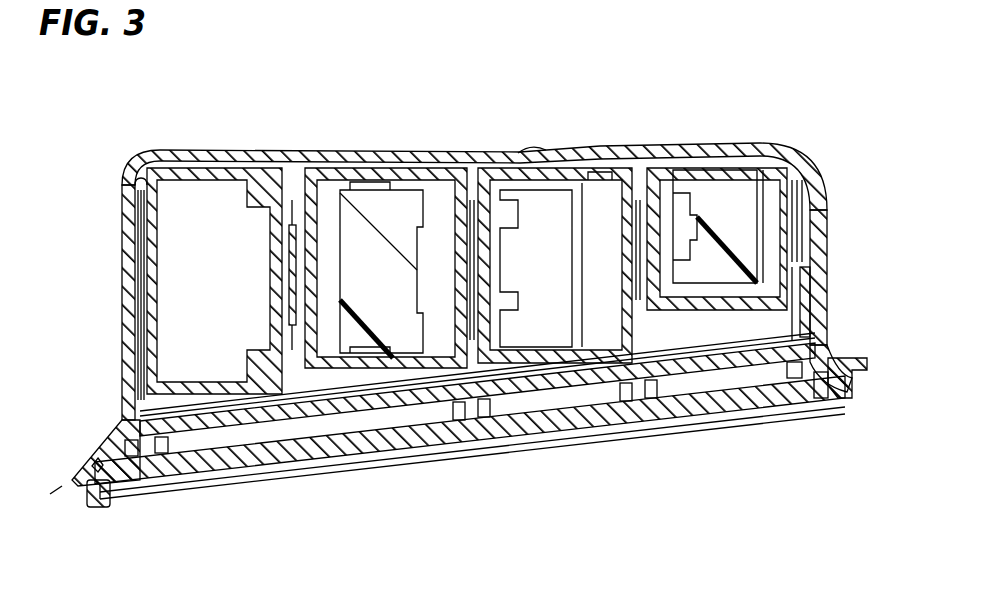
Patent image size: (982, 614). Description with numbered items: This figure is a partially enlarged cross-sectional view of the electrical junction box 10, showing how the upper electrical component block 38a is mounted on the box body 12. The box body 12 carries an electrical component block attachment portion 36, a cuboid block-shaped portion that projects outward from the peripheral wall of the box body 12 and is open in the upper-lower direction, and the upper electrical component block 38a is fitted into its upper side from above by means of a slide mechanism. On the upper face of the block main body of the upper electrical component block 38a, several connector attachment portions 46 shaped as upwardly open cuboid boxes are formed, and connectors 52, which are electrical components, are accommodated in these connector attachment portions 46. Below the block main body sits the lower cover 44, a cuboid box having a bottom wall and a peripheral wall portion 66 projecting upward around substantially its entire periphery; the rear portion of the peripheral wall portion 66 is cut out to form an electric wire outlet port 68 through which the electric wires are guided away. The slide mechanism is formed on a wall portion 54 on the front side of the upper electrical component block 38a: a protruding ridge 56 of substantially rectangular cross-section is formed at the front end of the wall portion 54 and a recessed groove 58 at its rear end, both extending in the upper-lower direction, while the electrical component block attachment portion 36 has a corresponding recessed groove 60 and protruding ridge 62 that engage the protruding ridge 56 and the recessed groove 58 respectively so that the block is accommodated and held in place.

The electrical junction box 10 is at (473, 72).
The box body 12 is at (498, 106).
The electrical component block attachment portion 36 is at (532, 134).
The upper electrical component block 38a is at (474, 176).
The lower cover 44 is at (228, 158).
The connector attachment portion 46 is at (311, 262).
The connector 52 is at (367, 222).
The electric wire outlet port 68 is at (455, 162).
The peripheral wall portion 66 is at (292, 410).
The wall portion 54 is at (398, 447).
The protruding ridge 56 is at (110, 478).
The recessed groove 60 is at (105, 462).
The protruding ridge 62 is at (823, 382).
The recessed groove 58 is at (815, 382).